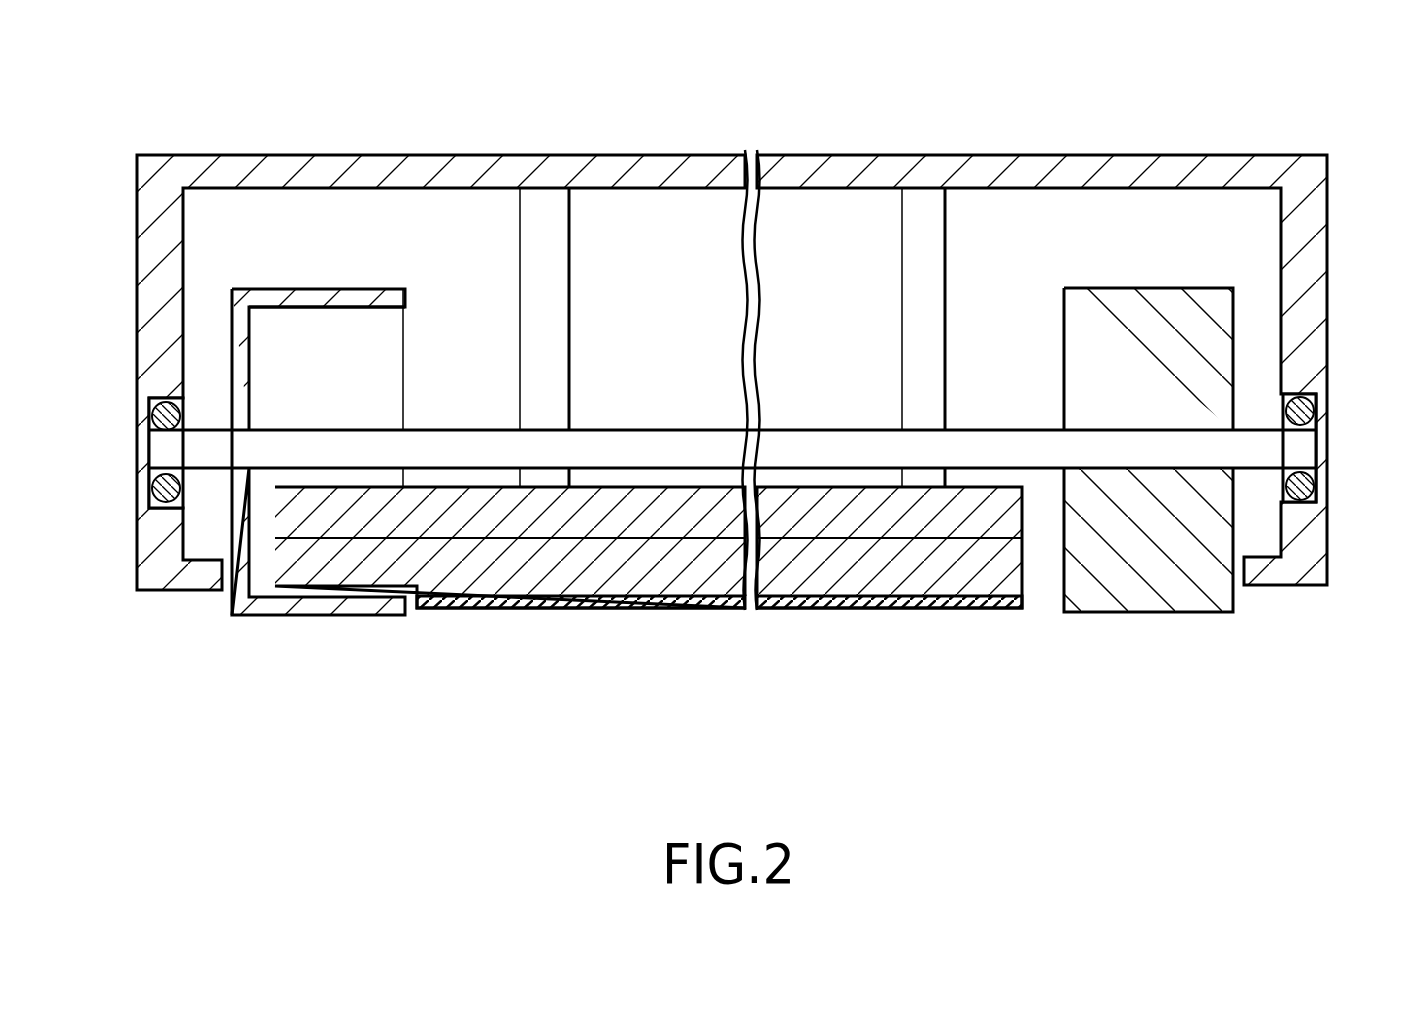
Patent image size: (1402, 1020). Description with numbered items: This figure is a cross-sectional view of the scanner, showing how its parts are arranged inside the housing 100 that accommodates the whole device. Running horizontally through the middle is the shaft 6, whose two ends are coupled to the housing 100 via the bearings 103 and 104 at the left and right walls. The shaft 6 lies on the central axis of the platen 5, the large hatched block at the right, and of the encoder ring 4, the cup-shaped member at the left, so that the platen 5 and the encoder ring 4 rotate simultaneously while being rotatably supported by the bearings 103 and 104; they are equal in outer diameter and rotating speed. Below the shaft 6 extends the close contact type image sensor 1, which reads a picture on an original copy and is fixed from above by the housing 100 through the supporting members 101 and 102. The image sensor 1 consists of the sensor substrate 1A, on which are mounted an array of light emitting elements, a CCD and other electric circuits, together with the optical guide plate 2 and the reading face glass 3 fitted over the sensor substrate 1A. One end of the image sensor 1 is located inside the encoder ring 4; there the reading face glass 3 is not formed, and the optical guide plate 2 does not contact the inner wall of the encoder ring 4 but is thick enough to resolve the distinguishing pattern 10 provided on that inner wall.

The housing 100 is at (481, 155).
The supporting member 101 is at (552, 246).
The supporting member 102 is at (930, 246).
The bearing 103 is at (150, 412).
The bearing 104 is at (1318, 411).
The encoder ring 4 is at (322, 289).
The distinguishing pattern 10 is at (383, 311).
The platen 5 is at (1150, 288).
The shaft 6 is at (601, 436).
The close contact type image sensor 1 is at (560, 608).
The sensor substrate 1A is at (982, 518).
The optical guide plate 2 is at (786, 587).
The reading face glass 3 is at (882, 608).